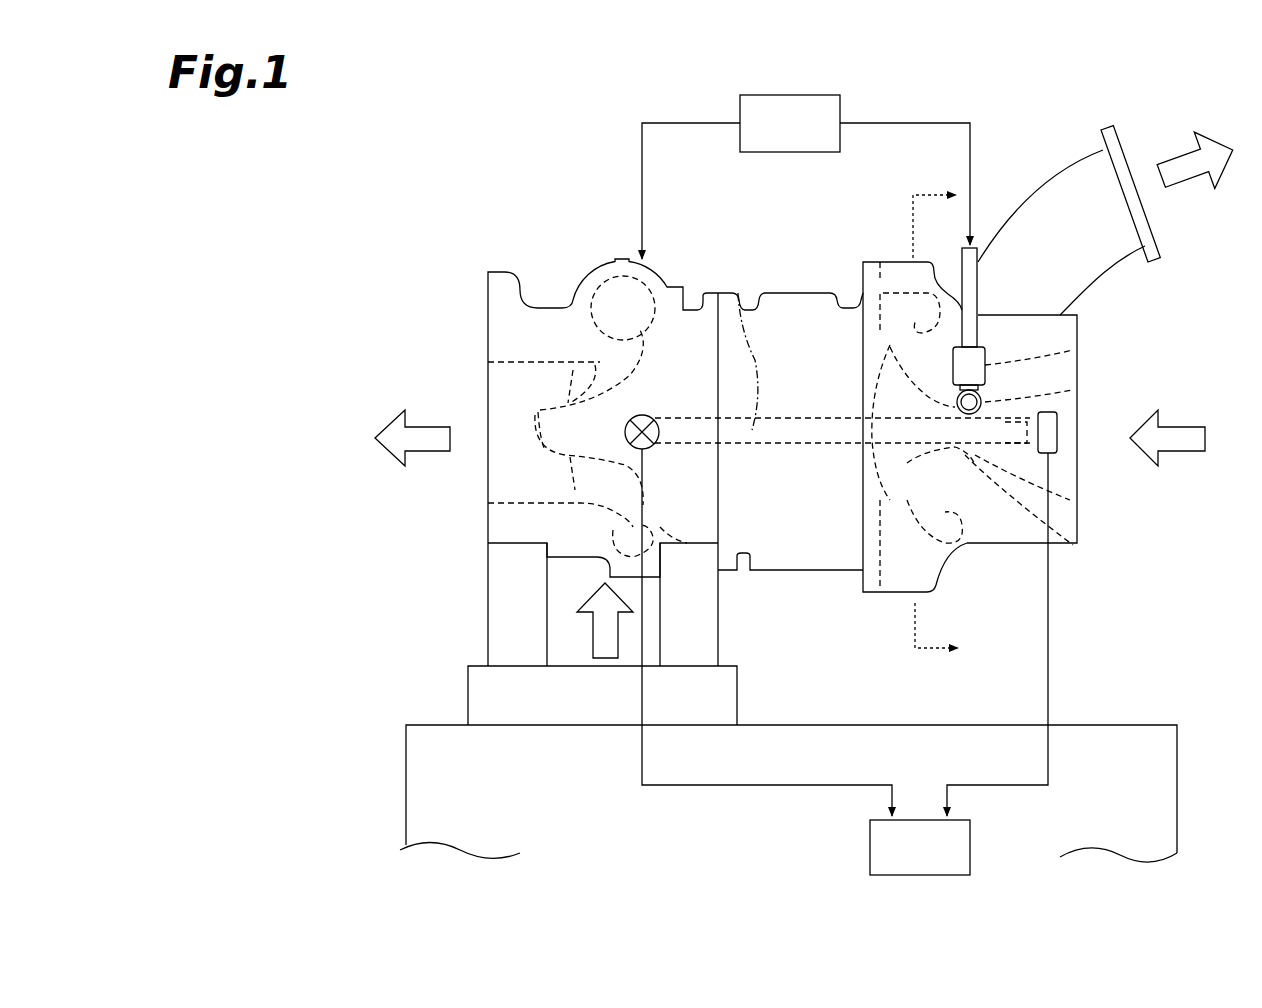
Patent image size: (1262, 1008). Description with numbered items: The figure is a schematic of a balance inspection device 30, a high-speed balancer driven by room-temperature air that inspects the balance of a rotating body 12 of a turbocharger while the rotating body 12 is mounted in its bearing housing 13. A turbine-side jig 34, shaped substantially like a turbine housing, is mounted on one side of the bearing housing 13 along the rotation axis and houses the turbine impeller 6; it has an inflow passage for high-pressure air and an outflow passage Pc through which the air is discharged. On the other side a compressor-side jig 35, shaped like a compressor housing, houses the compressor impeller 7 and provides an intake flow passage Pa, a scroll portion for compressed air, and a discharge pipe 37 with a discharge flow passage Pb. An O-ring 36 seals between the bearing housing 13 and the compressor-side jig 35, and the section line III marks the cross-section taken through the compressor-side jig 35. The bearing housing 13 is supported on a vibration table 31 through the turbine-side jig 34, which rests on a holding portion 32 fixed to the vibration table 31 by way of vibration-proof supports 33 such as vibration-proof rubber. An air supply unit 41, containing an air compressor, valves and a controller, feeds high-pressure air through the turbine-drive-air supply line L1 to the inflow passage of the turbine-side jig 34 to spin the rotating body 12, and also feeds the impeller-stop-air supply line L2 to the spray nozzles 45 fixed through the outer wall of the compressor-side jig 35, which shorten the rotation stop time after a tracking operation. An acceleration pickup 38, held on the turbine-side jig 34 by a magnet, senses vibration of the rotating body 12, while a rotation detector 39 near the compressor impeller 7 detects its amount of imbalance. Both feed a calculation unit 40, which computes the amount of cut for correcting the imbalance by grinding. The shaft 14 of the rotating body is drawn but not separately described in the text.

The balance inspection device 30 is at (480, 156).
The turbine-side jig 34 is at (588, 266).
The turbine impeller 6 is at (595, 365).
The rotating body 12 is at (528, 412).
The acceleration pickup 38 is at (656, 420).
The rotating shaft 14 is at (738, 292).
The bearing housing 13 is at (796, 292).
The O-ring 36 is at (878, 290).
The compressor impeller 7 is at (1058, 542).
The compressor-side jig 35 is at (1086, 333).
The spray nozzle 45 is at (983, 402).
The rotation detector 39 is at (1060, 435).
The discharge pipe 37 is at (1083, 163).
The air supply unit 41 is at (792, 95).
The turbine-drive-air supply line L1 is at (688, 122).
The impeller-stop-air supply line L2 is at (897, 122).
The intake flow passage Pa is at (1040, 410).
The discharge flow passage Pb is at (1097, 243).
The outflow passage Pc is at (488, 490).
The section III is at (921, 422).
The vibration-proof support 33 is at (488, 603).
The holding portion 32 is at (466, 699).
The vibration table 31 is at (403, 784).
The calculation unit 40 is at (970, 845).